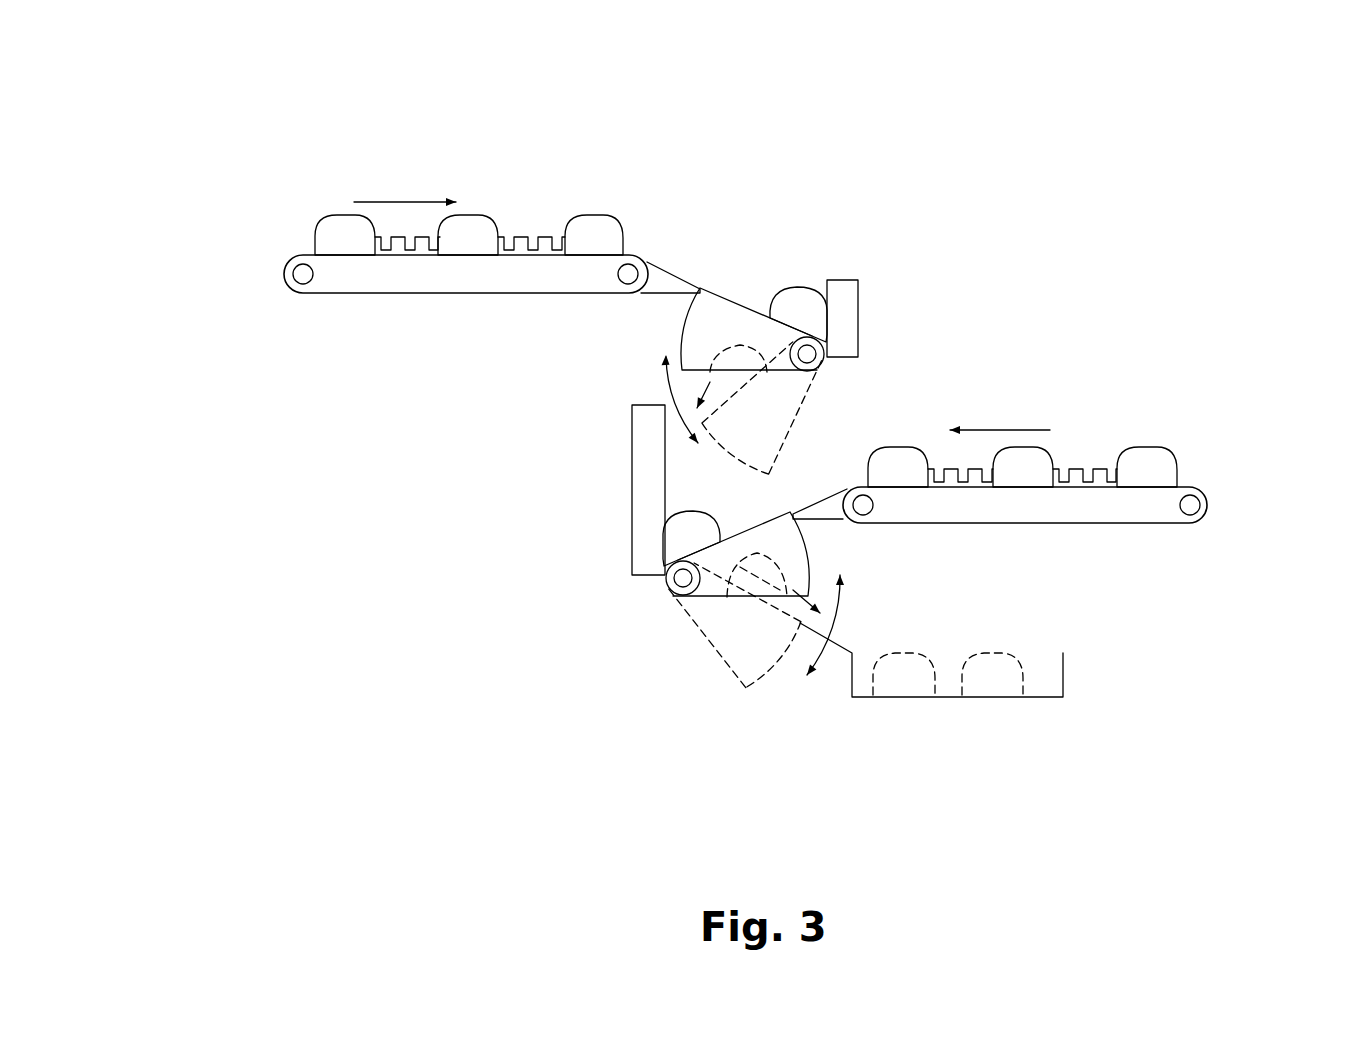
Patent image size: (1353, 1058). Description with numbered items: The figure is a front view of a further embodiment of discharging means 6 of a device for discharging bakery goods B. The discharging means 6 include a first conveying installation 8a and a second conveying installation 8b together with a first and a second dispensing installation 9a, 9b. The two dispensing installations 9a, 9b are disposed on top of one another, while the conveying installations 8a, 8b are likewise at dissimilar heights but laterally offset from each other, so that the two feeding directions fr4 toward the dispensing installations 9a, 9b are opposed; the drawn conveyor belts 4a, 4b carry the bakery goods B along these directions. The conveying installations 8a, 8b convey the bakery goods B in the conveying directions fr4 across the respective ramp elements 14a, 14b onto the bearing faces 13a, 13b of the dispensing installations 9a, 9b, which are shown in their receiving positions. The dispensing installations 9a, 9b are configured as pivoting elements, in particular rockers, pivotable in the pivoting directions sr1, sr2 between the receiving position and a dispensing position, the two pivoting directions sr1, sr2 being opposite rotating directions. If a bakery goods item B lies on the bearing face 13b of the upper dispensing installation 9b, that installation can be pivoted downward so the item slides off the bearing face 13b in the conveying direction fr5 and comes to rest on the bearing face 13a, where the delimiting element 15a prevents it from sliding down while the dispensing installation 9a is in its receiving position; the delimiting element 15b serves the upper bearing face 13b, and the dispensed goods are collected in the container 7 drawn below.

The discharging means 6 is at (309, 168).
The conveyor belt 4a is at (1080, 467).
The conveyor belt 4b is at (517, 237).
The bakery goods B is at (595, 227).
The collection container 7 is at (1063, 678).
The first conveying installation 8a is at (1177, 523).
The second conveying installation 8b is at (313, 293).
The first dispensing installation 9a is at (673, 590).
The second dispensing installation 9b is at (827, 365).
The bearing face 13a is at (748, 530).
The bearing face 13b is at (748, 310).
The ramp element 14a is at (825, 498).
The ramp element 14b is at (662, 280).
The delimiting element 15a is at (643, 545).
The delimiting element 15b is at (852, 297).
The pivoting direction sr1 is at (667, 392).
The pivoting direction sr2 is at (823, 657).
The conveying direction fr4 is at (702, 306).
The conveying direction fr5 is at (758, 497).